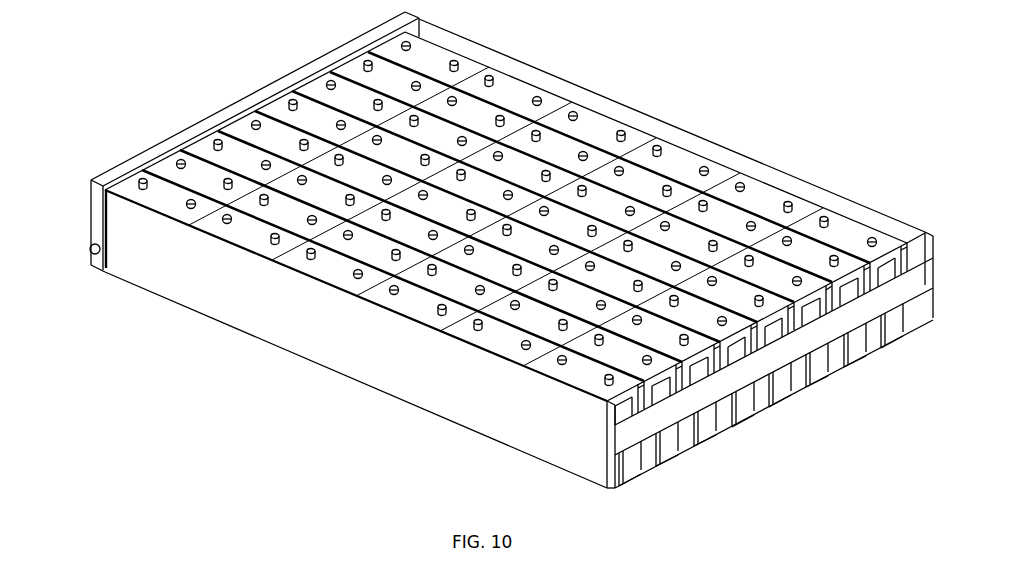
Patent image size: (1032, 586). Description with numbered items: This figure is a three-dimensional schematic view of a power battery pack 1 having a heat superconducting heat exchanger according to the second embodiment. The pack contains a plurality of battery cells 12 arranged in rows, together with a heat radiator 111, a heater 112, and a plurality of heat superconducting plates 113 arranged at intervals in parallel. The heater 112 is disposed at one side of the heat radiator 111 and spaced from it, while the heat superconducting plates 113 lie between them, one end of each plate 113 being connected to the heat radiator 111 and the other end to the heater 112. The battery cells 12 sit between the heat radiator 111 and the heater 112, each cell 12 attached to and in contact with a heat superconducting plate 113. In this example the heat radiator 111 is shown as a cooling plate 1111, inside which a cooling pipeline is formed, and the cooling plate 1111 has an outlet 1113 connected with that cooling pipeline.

The power battery pack 1 is at (152, 97).
The battery cell 12 is at (677, 160).
The heat radiator 111 is at (210, 382).
The cooling plate 1111 is at (98, 210).
The outlet 1113 is at (90, 253).
The heater 112 is at (690, 405).
The heat superconducting plate 113 is at (358, 347).